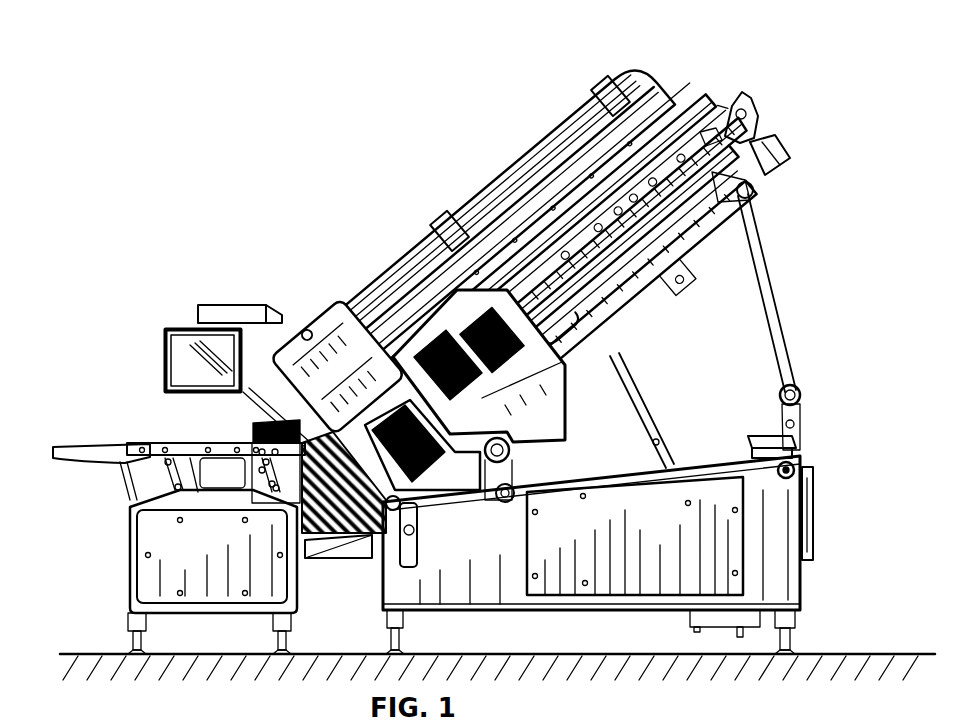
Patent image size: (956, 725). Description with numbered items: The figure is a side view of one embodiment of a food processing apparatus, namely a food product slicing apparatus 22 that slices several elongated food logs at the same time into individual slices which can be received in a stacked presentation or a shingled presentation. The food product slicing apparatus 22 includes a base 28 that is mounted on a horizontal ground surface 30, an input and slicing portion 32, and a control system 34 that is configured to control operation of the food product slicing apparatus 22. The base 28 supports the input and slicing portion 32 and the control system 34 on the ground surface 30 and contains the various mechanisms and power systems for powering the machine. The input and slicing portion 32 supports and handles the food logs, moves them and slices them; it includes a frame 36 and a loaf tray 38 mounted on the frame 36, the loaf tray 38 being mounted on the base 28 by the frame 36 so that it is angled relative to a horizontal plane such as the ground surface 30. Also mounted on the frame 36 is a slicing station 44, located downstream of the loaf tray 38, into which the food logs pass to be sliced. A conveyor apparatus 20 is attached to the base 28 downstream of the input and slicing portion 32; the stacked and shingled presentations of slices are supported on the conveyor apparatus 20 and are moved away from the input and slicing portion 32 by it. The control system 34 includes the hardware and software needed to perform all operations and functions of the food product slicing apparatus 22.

The conveyor apparatus 20 is at (116, 440).
The food product slicing apparatus 22 is at (146, 98).
The base 28 is at (828, 482).
The ground surface 30 is at (812, 654).
The input and slicing portion 32 is at (508, 157).
The control system 34 is at (166, 364).
The frame 36 is at (700, 258).
The loaf tray 38 is at (622, 265).
The slicing station 44 is at (303, 313).